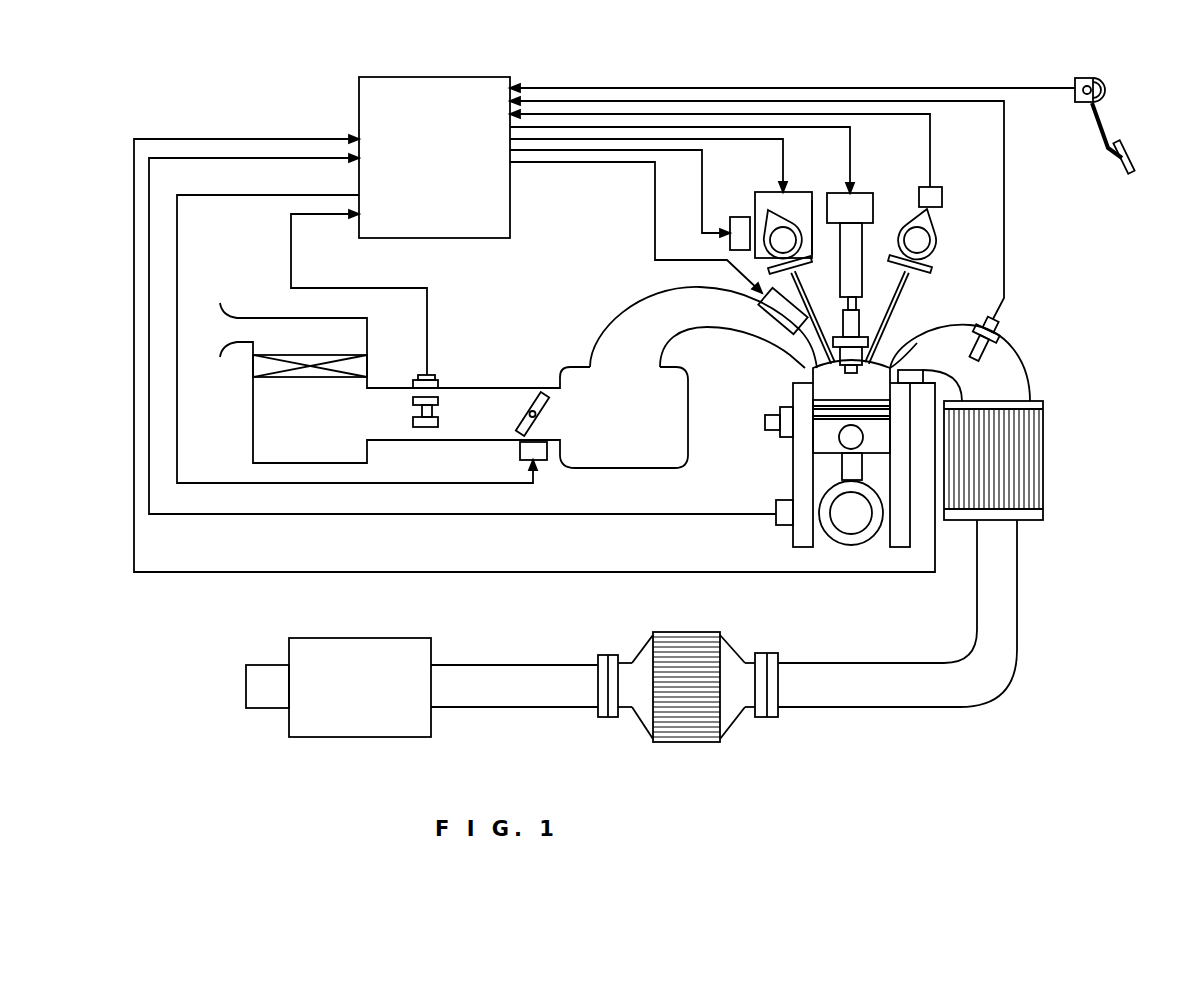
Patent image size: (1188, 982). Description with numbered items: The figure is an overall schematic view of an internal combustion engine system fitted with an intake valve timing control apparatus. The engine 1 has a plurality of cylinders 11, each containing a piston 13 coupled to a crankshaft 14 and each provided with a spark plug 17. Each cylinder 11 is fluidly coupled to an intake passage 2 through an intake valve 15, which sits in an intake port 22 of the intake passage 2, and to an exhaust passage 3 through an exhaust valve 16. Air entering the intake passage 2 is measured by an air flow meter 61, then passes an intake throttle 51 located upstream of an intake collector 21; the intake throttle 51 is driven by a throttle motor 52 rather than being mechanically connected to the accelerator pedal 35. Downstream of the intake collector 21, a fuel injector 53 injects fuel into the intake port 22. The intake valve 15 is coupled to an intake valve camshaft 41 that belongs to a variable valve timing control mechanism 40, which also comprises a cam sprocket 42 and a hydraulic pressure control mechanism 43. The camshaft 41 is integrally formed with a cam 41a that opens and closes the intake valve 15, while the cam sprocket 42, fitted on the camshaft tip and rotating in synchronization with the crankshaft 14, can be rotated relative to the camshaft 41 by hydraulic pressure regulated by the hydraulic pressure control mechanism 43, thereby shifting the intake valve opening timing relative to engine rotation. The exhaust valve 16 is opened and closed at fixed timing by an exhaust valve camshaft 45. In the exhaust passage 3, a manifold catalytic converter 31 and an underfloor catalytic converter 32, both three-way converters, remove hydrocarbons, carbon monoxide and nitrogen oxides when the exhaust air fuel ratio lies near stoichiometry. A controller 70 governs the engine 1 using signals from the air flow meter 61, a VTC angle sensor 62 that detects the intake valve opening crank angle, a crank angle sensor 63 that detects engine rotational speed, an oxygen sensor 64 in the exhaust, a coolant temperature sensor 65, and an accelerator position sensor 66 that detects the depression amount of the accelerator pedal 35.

The engine 1 is at (825, 491).
The intake passage 2 is at (634, 284).
The exhaust passage 3 is at (950, 330).
The cylinder 11 is at (793, 393).
The piston 13 is at (820, 443).
The crankshaft 14 is at (838, 520).
The intake valve 15 is at (800, 368).
The exhaust valve 16 is at (905, 330).
The spark plug 17 is at (856, 316).
The intake collector 21 is at (610, 457).
The intake port 22 is at (795, 352).
The manifold catalytic converter 31 is at (1043, 455).
The underfloor catalytic converter 32 is at (698, 740).
The accelerator pedal 35 is at (1130, 168).
The variable valve timing control mechanism 40 is at (751, 179).
The intake valve camshaft 41 is at (790, 236).
The cam 41a is at (785, 226).
The cam sprocket 42 is at (810, 260).
The hydraulic pressure control mechanism 43 is at (812, 208).
The exhaust valve camshaft 45 is at (925, 240).
The intake throttle 51 is at (536, 395).
The throttle motor 52 is at (520, 452).
The fuel injector 53 is at (770, 312).
The air flow meter 61 is at (432, 376).
The VTC angle sensor 62 is at (736, 217).
The crank angle sensor 63 is at (776, 505).
The oxygen sensor 64 is at (1000, 352).
The coolant temperature sensor 65 is at (912, 383).
The accelerator position sensor 66 is at (1082, 77).
The controller 70 is at (470, 240).